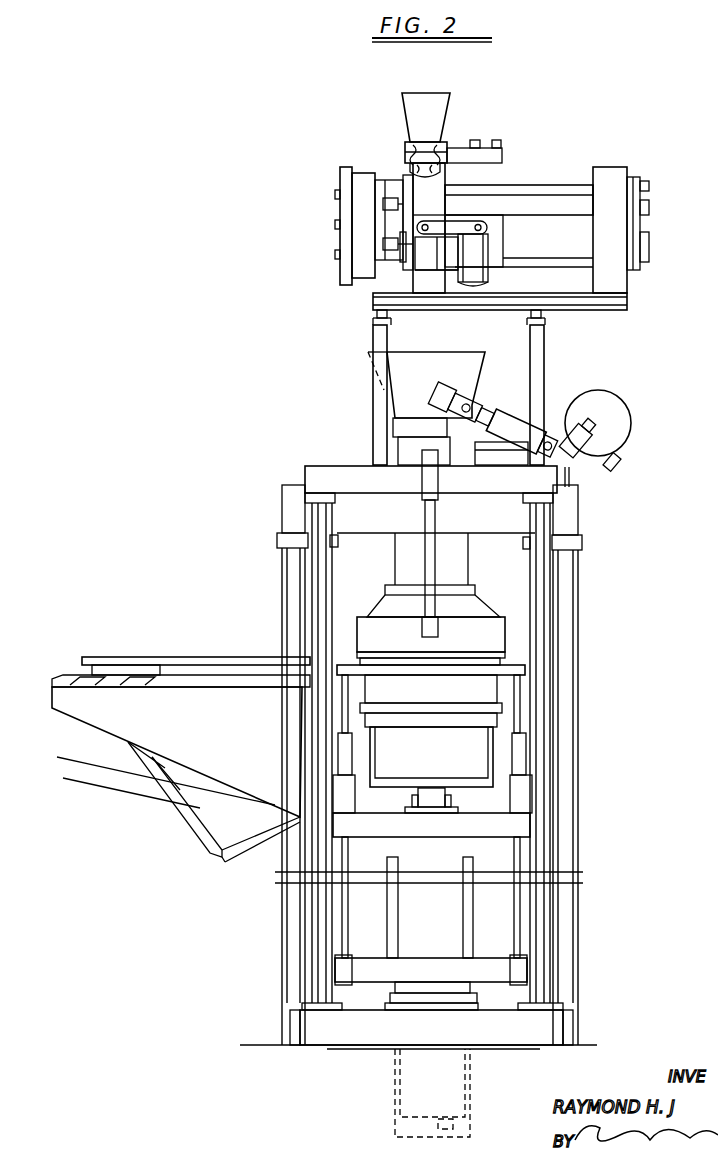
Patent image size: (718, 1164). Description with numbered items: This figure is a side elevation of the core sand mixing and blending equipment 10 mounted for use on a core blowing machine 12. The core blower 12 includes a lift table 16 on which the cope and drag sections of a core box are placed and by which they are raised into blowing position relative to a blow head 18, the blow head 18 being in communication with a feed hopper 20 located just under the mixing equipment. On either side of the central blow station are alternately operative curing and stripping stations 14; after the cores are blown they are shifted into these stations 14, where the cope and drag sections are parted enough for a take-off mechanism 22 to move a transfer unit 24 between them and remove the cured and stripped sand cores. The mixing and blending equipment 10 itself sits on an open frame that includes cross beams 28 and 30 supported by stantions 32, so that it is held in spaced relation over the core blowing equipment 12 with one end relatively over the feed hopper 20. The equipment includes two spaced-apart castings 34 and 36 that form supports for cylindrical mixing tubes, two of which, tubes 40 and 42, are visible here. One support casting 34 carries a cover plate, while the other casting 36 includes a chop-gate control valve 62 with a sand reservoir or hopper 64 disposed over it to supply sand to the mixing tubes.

The core sand mixing and blending equipment 10 is at (577, 176).
The core blowing machine 12 is at (287, 603).
The curing and stripping stations 14 is at (548, 617).
The lift table 16 is at (423, 723).
The blow head 18 is at (380, 633).
The feed hopper 20 is at (455, 389).
The take-off mechanism 22 is at (250, 751).
The transfer unit 24 is at (185, 657).
The cross beam 28 is at (580, 312).
The cross beam 30 is at (387, 317).
The stantions 32 is at (380, 408).
The support casting 34 is at (613, 282).
The support casting 36 is at (420, 282).
The cylindrical mixing tube 40 is at (529, 190).
The cylindrical mixing tube 42 is at (519, 257).
The chop-gate control valve 62 is at (450, 150).
The sand reservoir or hopper 64 is at (440, 120).